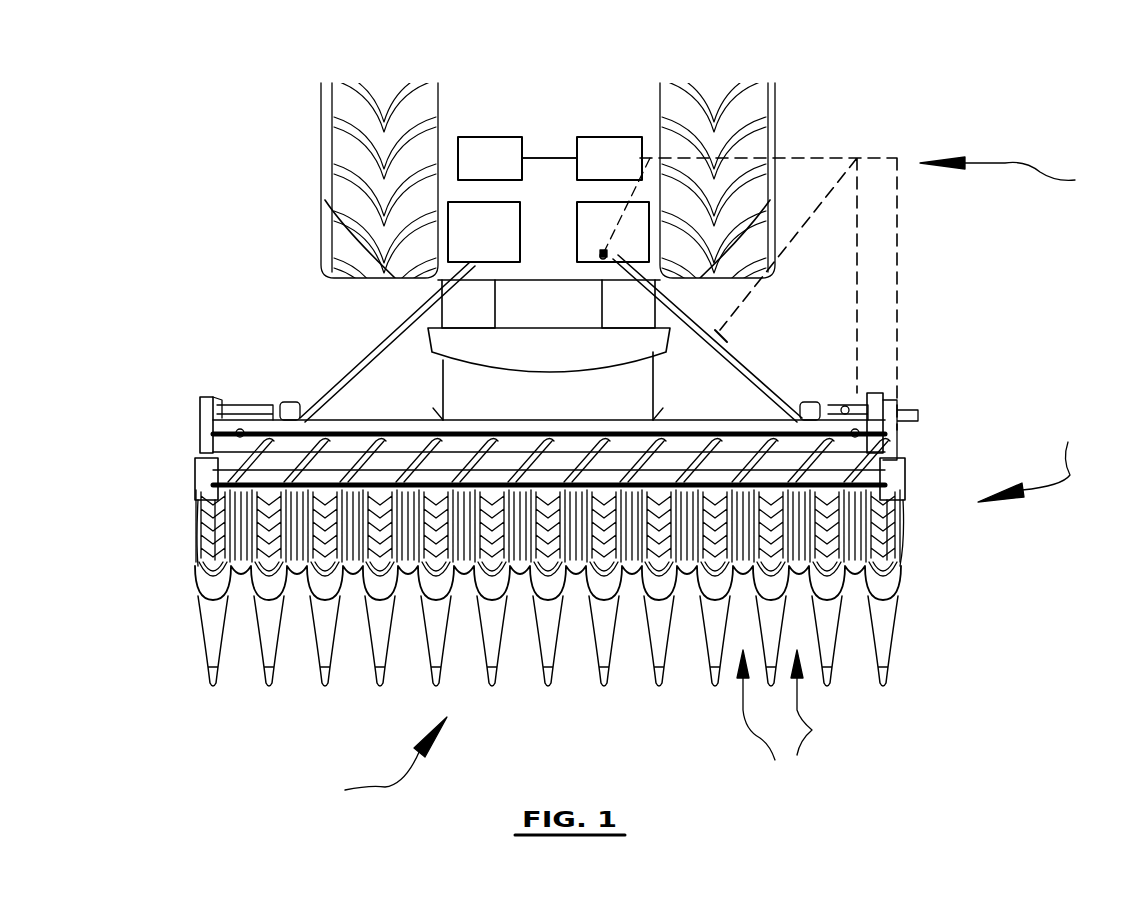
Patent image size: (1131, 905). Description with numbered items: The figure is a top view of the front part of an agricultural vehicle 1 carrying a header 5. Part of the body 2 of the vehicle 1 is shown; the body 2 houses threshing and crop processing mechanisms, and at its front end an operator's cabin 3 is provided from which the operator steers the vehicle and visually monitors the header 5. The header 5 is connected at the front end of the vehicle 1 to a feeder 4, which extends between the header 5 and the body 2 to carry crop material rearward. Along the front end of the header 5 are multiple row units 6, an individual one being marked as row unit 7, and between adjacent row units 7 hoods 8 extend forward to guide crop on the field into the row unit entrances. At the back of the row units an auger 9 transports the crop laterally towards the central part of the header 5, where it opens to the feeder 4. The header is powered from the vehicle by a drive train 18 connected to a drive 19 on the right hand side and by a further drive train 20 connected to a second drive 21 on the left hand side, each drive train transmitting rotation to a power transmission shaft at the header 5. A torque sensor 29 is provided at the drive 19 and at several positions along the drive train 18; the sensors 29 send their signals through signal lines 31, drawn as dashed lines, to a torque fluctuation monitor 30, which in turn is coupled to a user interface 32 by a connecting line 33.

The agricultural vehicle 1 is at (1005, 175).
The body 2 is at (557, 139).
The operator's cabin 3 is at (556, 347).
The feeder 4 is at (626, 409).
The header 5 is at (643, 457).
The multiple row units 6 is at (385, 762).
The row unit 7 is at (774, 716).
The hoods 8 is at (240, 650).
The auger 9 is at (245, 458).
The drive train 18 is at (770, 372).
The drive 19 is at (624, 245).
The further drive train 20 is at (353, 367).
The second drive 21 is at (500, 245).
The torque sensor 29 is at (600, 262).
The torque fluctuation monitor 30 is at (615, 137).
The signal lines 31 is at (810, 158).
The user interface 32 is at (487, 137).
The connecting line 33 is at (565, 158).